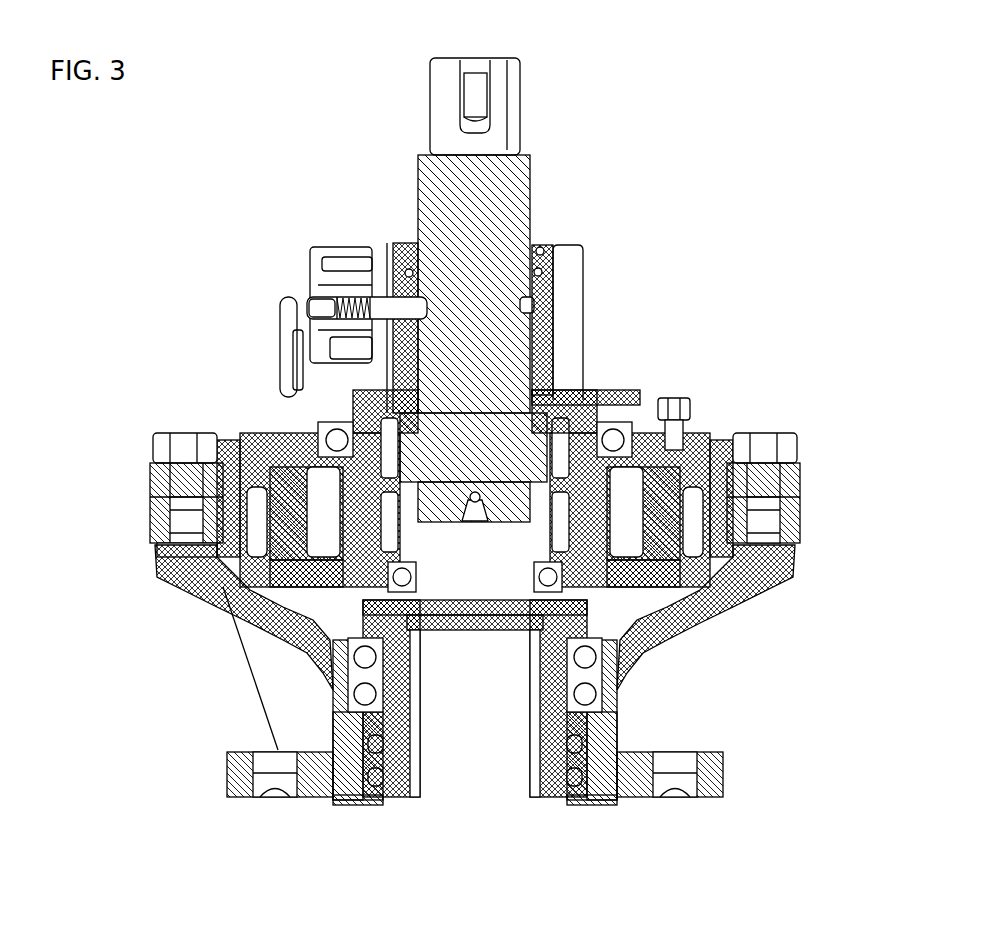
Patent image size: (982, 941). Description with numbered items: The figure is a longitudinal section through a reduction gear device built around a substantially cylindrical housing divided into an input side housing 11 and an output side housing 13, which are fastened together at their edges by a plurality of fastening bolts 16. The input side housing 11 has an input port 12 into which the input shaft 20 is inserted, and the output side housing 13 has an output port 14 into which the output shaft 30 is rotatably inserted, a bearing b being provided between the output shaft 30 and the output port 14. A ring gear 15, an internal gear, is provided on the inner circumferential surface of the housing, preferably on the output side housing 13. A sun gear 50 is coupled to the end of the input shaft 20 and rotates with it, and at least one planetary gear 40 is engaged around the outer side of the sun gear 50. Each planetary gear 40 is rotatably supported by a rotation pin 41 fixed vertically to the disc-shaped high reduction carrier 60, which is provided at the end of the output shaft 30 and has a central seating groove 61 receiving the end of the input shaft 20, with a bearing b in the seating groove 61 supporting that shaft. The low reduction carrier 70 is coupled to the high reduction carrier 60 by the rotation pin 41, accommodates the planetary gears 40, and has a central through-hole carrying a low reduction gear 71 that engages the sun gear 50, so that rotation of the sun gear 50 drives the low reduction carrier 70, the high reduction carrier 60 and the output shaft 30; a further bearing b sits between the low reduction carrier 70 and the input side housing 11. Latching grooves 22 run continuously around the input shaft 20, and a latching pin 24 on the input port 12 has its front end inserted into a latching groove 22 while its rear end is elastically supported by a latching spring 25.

The input side housing 11 is at (255, 440).
The input port 12 is at (545, 295).
The output side housing 13 is at (227, 578).
The output port 14 is at (313, 708).
The ring gear 15 is at (195, 455).
The fastening bolts 16 is at (195, 548).
The input shaft 20 is at (445, 170).
The latching grooves 22 is at (455, 300).
The latching pin 24 is at (377, 247).
The latching spring 25 is at (307, 283).
The output shaft 30 is at (548, 770).
The planetary gear 40 is at (300, 535).
The rotation pin 41 is at (323, 572).
The sun gear 50 is at (500, 430).
The high reduction carrier 60 is at (700, 585).
The seating groove 61 is at (630, 462).
The low reduction carrier 70 is at (630, 415).
The low reduction gear 71 is at (370, 420).
The bearing b is at (330, 435).